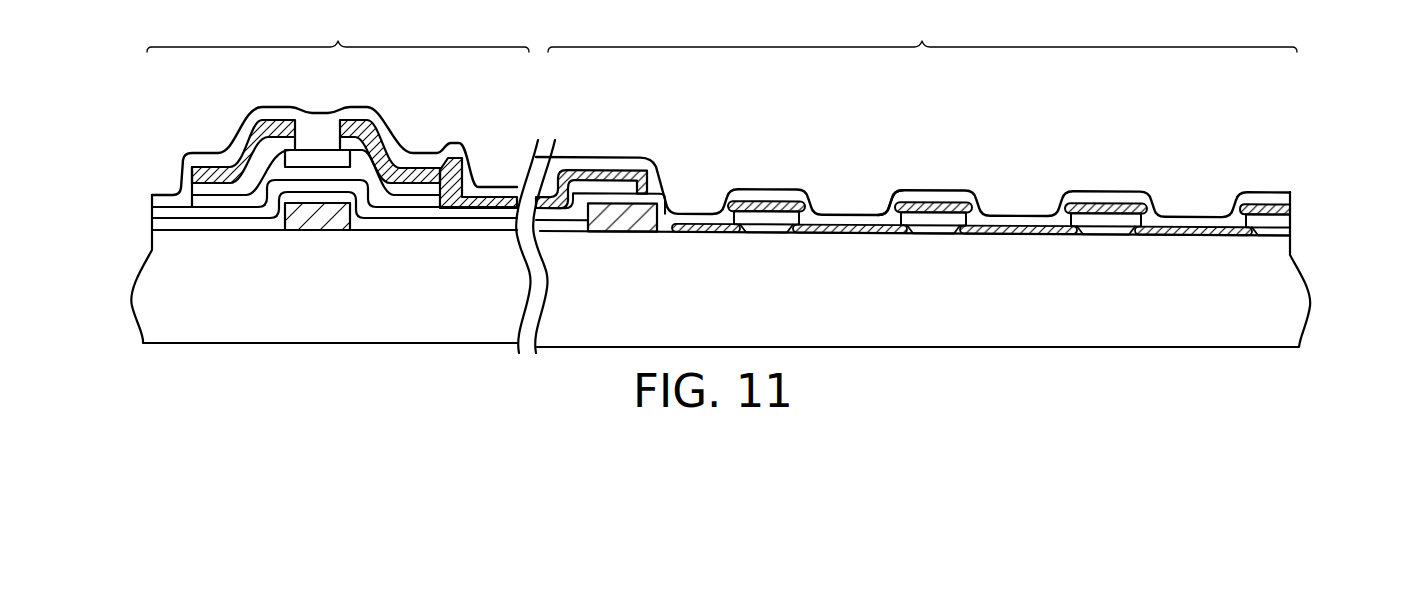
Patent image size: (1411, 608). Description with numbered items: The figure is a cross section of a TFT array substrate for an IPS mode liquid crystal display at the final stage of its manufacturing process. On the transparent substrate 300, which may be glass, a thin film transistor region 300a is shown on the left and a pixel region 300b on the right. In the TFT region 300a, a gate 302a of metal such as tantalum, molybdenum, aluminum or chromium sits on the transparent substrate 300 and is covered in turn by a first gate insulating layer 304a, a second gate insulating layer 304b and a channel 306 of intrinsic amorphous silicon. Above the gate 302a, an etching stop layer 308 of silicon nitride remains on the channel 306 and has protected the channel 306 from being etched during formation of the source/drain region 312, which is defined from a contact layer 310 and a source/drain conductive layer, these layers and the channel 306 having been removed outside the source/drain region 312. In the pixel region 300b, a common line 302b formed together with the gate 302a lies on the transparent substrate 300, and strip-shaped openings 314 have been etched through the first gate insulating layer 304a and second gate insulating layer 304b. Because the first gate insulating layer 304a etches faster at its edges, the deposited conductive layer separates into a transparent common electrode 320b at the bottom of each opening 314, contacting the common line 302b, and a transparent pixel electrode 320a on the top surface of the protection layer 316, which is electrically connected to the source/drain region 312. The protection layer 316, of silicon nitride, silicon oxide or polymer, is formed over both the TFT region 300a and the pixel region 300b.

The transparent substrate 300 is at (1285, 303).
The thin film transistor region 300a is at (338, 28).
The pixel region 300b is at (922, 28).
The gate 302a is at (302, 224).
The common line 302b is at (621, 213).
The first gate insulating layer 304a is at (152, 221).
The second gate insulating layer 304b is at (152, 209).
The channel 306 is at (190, 197).
The etching stop layer 308 is at (315, 122).
The contact layer 310 is at (477, 148).
The source/drain region 312 is at (253, 125).
The opening 314 is at (893, 213).
The protection layer 316 is at (227, 153).
The transparent pixel electrode 320a is at (568, 170).
The transparent common electrode 320b is at (693, 227).